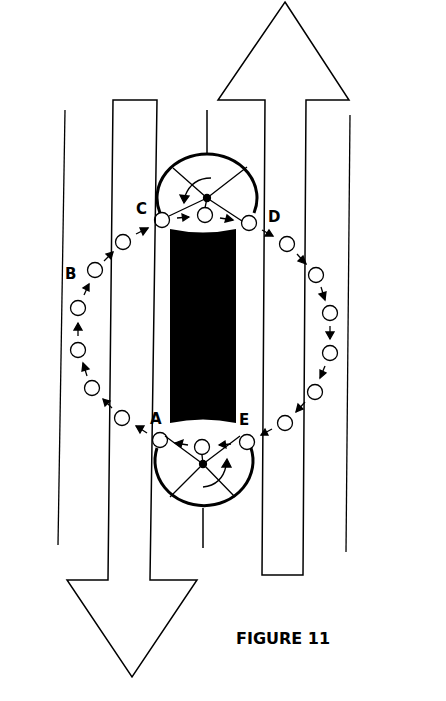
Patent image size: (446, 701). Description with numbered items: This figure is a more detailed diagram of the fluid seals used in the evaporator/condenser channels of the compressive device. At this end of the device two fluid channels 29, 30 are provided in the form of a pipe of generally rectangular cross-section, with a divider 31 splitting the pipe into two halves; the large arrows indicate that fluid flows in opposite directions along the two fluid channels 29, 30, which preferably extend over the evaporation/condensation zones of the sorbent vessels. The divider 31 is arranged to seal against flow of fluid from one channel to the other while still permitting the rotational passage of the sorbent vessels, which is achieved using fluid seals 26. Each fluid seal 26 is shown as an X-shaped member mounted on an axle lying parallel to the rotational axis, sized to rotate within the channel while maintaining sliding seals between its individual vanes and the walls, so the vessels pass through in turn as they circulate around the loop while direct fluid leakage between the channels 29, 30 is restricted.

The fluid seal 26 is at (188, 153).
The fluid channel 29 is at (283, 288).
The fluid channel 30 is at (132, 388).
The divider 31 is at (205, 132).